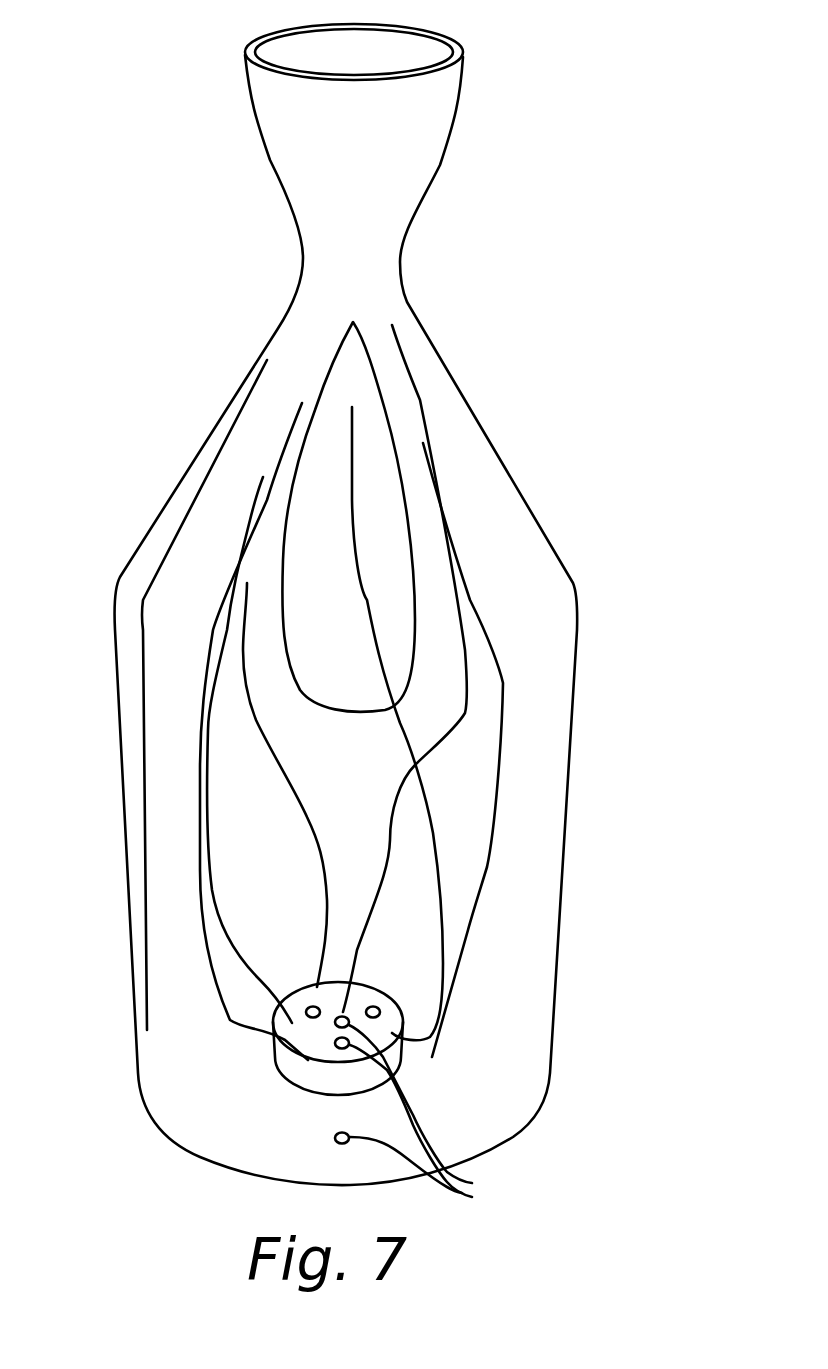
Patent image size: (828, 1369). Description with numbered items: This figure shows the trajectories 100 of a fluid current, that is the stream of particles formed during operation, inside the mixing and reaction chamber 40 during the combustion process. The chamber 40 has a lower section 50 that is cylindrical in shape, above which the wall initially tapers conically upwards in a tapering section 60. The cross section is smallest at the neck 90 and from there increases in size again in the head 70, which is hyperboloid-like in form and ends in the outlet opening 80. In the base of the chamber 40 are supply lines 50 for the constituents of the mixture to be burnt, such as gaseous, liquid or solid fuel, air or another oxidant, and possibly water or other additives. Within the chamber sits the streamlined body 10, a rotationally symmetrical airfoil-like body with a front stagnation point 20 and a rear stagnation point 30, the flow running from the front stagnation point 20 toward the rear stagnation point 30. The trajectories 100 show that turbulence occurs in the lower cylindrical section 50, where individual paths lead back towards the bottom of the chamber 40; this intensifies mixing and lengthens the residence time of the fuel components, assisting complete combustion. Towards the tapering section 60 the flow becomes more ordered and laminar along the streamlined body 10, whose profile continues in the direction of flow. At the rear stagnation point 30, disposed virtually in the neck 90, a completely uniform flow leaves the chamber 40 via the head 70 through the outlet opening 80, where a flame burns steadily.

The streamlined body 10 is at (387, 523).
The front stagnation point 20 is at (470, 708).
The rear stagnation point 30 is at (353, 297).
The mixing and reaction chamber 40 is at (584, 766).
The lower section 50 is at (125, 868).
The tapering section 60 is at (196, 464).
The head 70 is at (258, 120).
The outlet opening 80 is at (410, 48).
The neck 90 is at (300, 266).
The trajectories 100 is at (415, 385).